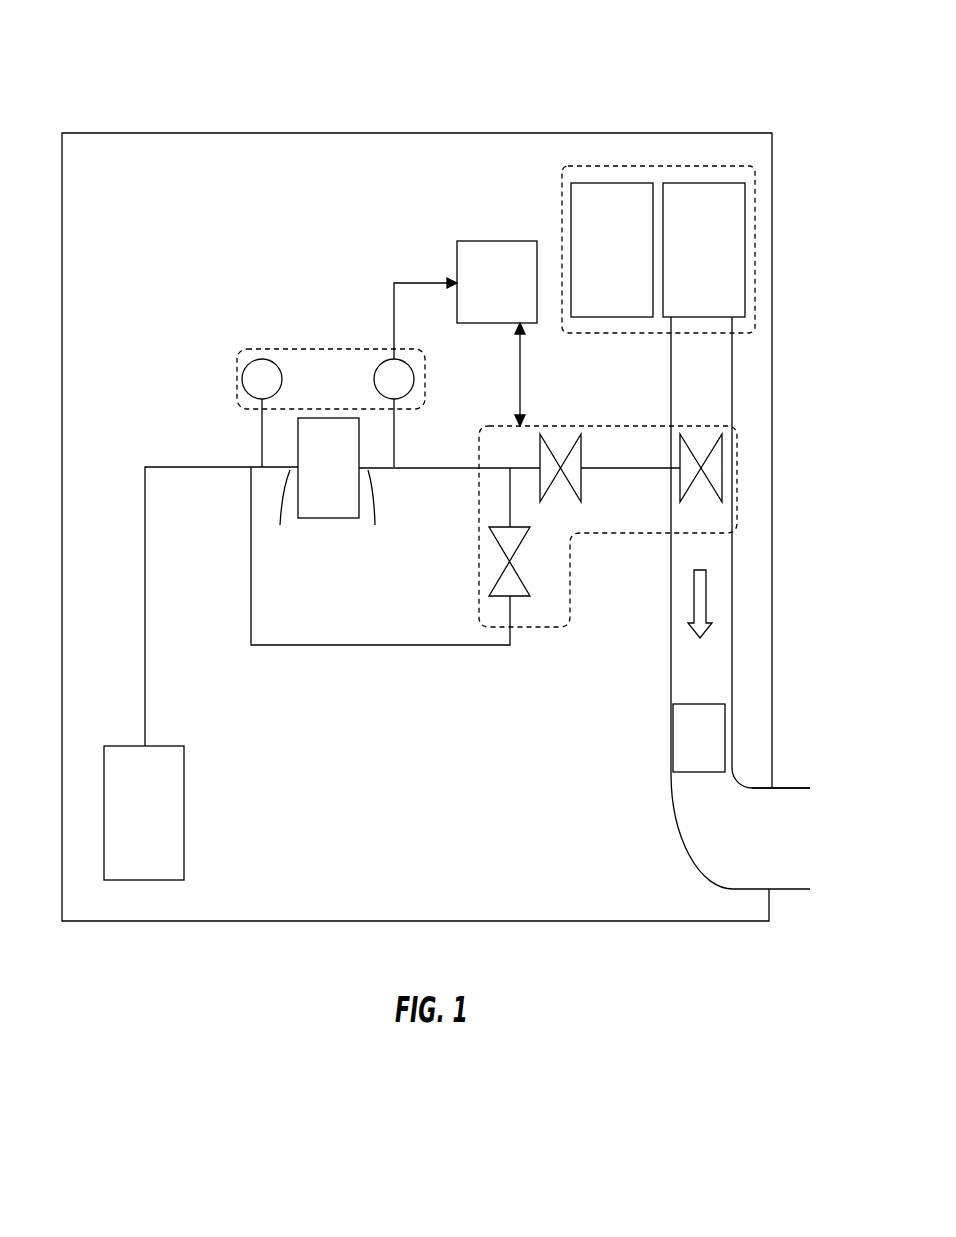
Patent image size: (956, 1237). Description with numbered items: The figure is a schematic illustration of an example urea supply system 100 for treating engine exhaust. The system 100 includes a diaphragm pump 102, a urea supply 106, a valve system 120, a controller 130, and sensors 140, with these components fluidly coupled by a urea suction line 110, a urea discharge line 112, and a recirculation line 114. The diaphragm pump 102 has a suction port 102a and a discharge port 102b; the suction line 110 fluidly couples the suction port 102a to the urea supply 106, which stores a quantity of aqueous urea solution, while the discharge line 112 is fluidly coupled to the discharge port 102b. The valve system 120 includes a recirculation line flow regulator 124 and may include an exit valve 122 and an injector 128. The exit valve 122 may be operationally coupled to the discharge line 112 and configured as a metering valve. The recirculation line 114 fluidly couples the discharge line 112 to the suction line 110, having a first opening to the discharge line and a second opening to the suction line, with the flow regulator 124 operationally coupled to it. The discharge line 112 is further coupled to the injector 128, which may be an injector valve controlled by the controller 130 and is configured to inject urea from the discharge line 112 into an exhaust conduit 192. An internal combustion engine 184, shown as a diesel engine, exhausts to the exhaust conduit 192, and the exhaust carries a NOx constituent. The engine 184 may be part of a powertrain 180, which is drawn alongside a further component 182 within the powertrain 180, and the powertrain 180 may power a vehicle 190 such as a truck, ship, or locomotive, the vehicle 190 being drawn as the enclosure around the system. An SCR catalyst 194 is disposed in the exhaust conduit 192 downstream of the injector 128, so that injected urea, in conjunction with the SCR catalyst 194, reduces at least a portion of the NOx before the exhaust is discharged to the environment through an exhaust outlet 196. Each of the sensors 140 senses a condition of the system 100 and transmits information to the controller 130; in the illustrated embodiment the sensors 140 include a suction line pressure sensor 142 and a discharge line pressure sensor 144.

The urea supply system 100 is at (197, 55).
The diaphragm pump 102 is at (328, 468).
The suction port 102a is at (282, 514).
The discharge port 102b is at (373, 514).
The urea supply 106 is at (144, 813).
The urea suction line 110 is at (145, 594).
The urea discharge line 112 is at (450, 472).
The recirculation line 114 is at (437, 645).
The valve system 120 is at (600, 426).
The exit valve 122 is at (572, 480).
The recirculation line flow regulator 124 is at (519, 545).
The injector 128 is at (712, 488).
The controller 130 is at (465, 333).
The sensors 140 is at (345, 349).
The suction line pressure sensor 142 is at (262, 413).
The discharge line pressure sensor 144 is at (394, 413).
The powertrain 180 is at (638, 166).
The first unit component 182 is at (612, 250).
The internal combustion engine 184 is at (704, 250).
The vehicle 190 is at (500, 132).
The exhaust conduit 192 is at (694, 359).
The SCR catalyst 194 is at (699, 738).
The exhaust outlet 196 is at (795, 838).